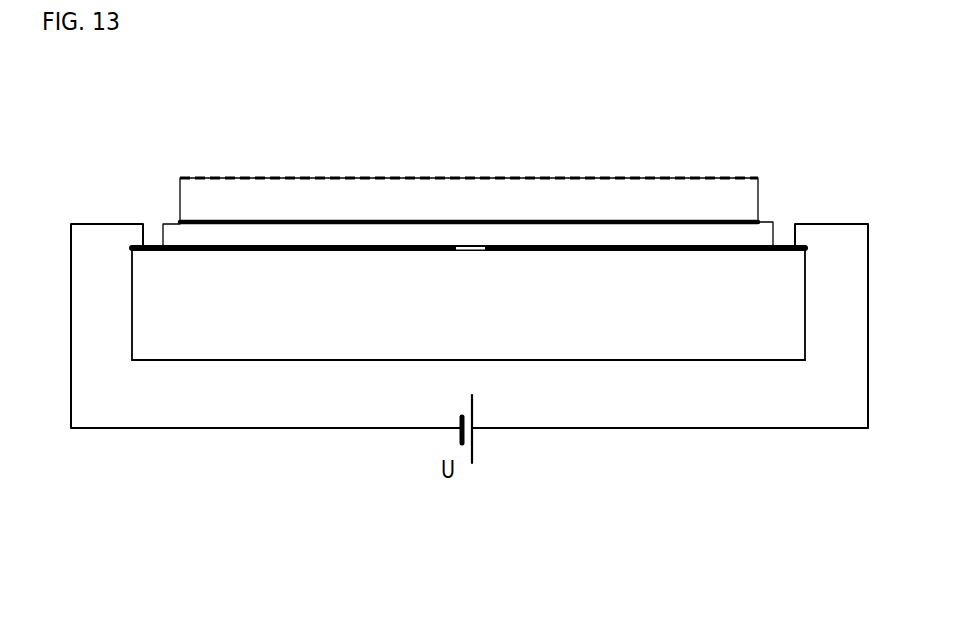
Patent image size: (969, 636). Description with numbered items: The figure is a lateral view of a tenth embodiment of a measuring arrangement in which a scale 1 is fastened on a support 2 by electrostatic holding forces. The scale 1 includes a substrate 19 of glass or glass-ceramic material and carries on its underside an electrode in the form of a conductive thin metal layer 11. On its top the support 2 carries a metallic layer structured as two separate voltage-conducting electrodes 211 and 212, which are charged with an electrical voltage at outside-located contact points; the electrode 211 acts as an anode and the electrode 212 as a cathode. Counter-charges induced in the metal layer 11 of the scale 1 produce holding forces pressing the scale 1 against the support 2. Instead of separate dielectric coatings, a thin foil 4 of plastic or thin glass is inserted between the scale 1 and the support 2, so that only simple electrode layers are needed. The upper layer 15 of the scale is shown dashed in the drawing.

The scale 1 is at (770, 223).
The support 2 is at (764, 340).
The thin foil 4 is at (173, 237).
The conductive thin metal layer 11 is at (492, 220).
The upper electrode (dashed) 15 is at (222, 177).
The substrate 19 is at (362, 210).
The electrode 211 is at (235, 252).
The electrode 212 is at (640, 250).